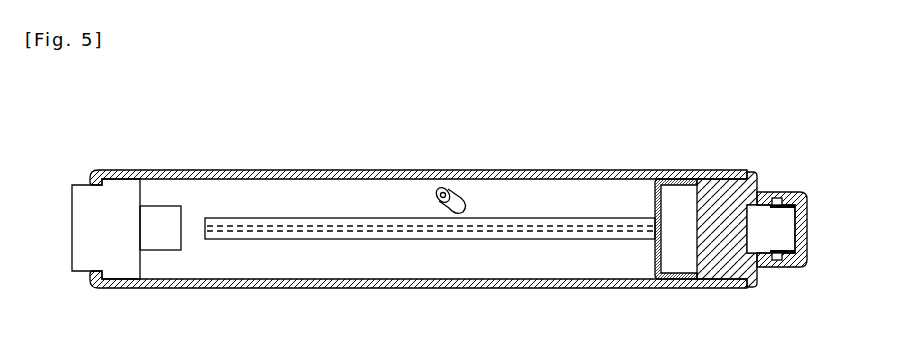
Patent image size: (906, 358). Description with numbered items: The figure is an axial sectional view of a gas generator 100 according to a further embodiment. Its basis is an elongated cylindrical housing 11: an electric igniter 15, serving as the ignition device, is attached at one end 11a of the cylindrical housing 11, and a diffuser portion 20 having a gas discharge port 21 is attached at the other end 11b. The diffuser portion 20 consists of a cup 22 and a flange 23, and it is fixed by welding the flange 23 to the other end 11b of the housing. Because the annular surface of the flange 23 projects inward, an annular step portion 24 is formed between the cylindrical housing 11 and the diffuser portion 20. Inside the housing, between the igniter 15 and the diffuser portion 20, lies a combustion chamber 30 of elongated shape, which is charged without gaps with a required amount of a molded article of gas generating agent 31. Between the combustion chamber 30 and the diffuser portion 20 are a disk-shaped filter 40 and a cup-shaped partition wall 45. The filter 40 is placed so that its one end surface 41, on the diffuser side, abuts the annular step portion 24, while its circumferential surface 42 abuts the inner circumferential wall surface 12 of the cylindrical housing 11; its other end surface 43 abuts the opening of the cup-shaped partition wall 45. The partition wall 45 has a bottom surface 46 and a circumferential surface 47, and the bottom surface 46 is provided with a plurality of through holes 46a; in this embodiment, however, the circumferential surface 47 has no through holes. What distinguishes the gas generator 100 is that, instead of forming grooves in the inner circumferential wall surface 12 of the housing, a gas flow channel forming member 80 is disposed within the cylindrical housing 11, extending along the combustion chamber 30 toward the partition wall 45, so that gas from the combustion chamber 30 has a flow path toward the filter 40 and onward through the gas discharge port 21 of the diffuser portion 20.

The gas generator 100 is at (436, 153).
The cylindrical housing 11 is at (507, 170).
The one end of cylindrical housing 11a is at (77, 272).
The other end of cylindrical housing 11b is at (751, 289).
The inner circumferential wall surface 12 is at (241, 180).
The electric igniter 15 is at (122, 238).
The diffuser portion 20 is at (819, 209).
The gas discharge port 21 is at (780, 198).
The cup 22 is at (800, 193).
The flange 23 is at (758, 284).
The annular step portion 24 is at (734, 186).
The combustion chamber 30 is at (340, 210).
The gas generating agent 31 is at (466, 200).
The filter 40 is at (715, 274).
The one end surface 41 is at (753, 223).
The circumferential surface 42 is at (716, 178).
The other end surface 43 is at (697, 247).
The cup-shaped partition wall 45 is at (666, 175).
The bottom surface 46 is at (655, 256).
The through holes 46a is at (655, 197).
The circumferential surface 47 is at (684, 178).
The gas flow channel forming member 80 is at (424, 242).